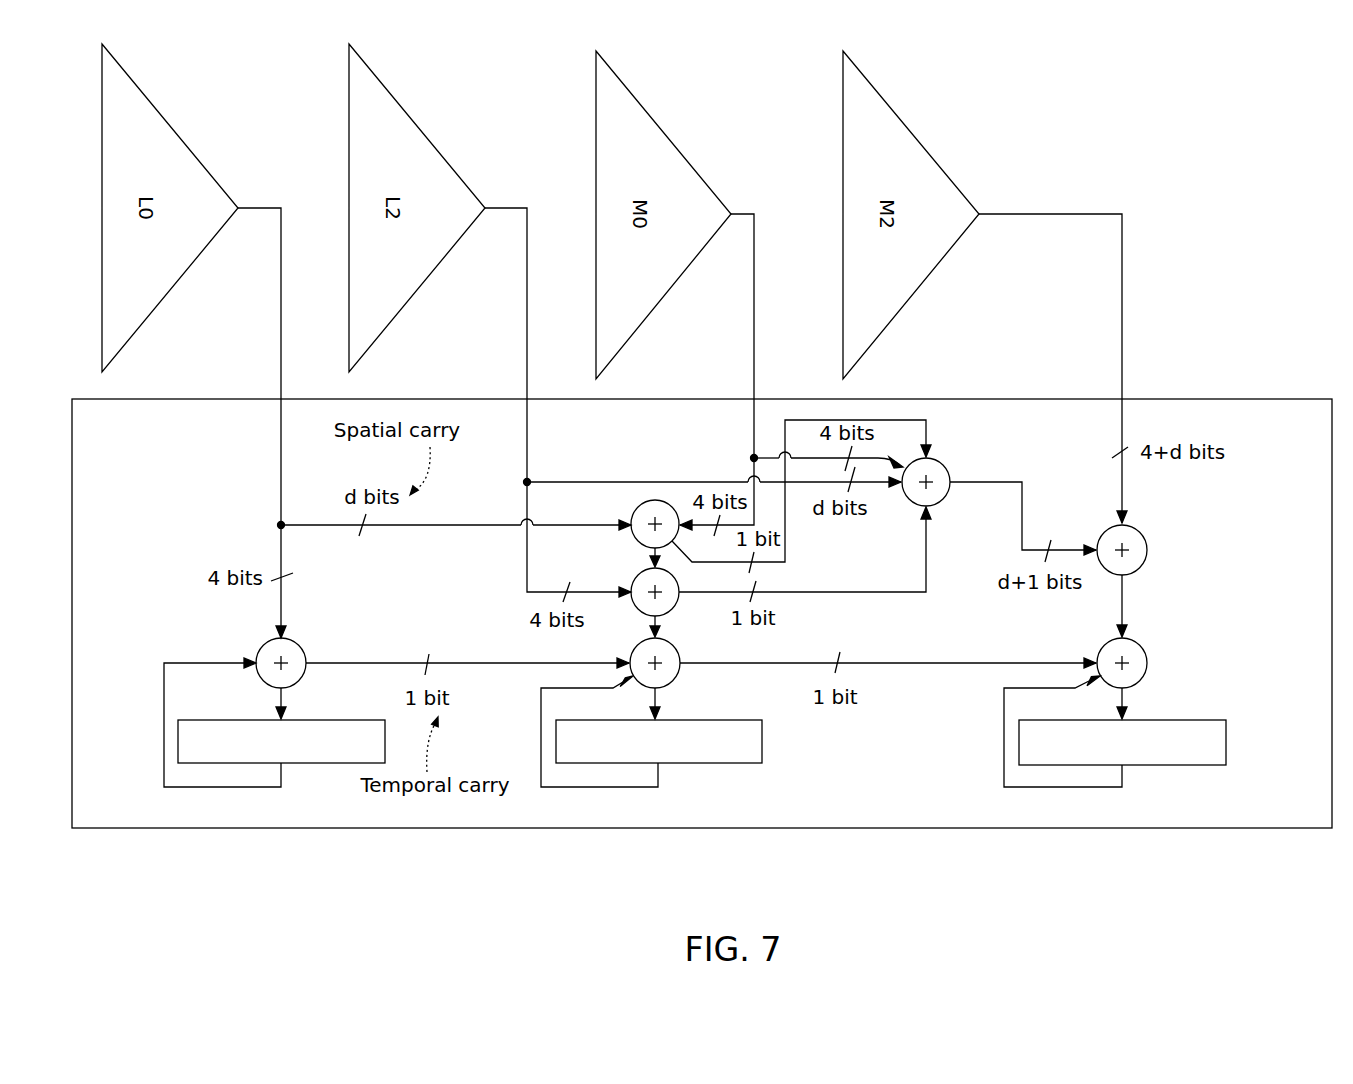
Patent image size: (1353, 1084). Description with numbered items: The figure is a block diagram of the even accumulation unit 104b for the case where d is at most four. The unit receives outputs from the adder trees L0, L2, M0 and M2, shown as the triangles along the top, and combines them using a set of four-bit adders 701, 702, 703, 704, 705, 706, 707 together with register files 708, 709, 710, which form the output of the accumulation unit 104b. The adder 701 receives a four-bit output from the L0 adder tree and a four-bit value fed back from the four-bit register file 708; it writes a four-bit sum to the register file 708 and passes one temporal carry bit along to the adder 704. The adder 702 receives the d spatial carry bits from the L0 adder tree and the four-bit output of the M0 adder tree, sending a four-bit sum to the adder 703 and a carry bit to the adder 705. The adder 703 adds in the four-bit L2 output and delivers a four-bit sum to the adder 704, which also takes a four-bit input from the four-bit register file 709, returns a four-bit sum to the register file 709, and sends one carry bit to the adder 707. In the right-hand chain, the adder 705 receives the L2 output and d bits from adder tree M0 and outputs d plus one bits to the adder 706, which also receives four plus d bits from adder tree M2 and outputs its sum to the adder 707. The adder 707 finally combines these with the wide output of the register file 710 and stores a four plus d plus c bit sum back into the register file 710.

The accumulation unit 2 (even) 104b is at (149, 829).
The adder 701 is at (299, 645).
The adder 702 is at (634, 512).
The adder 703 is at (676, 580).
The adder 704 is at (633, 650).
The adder 705 is at (944, 466).
The adder 706 is at (1144, 537).
The adder 707 is at (1144, 650).
The 4-bit register file 708 is at (223, 719).
The 4-bit register file 709 is at (720, 718).
The 4+d+c bit register file 710 is at (1183, 718).